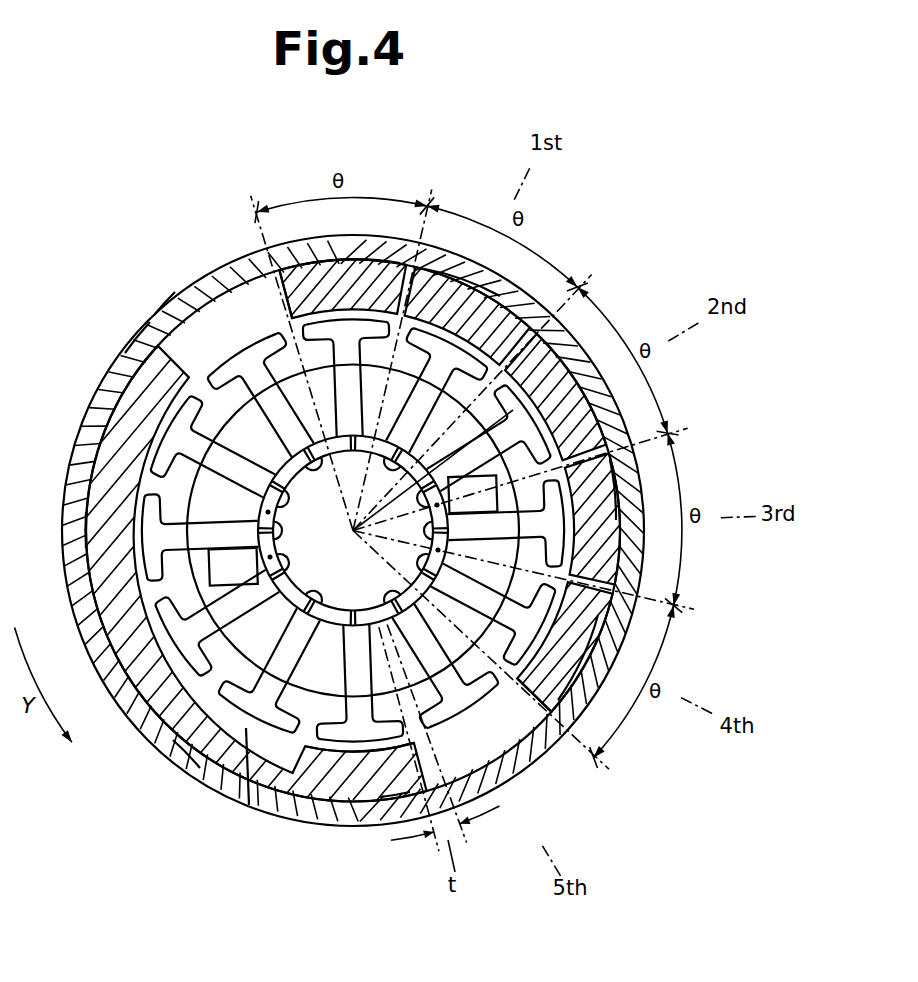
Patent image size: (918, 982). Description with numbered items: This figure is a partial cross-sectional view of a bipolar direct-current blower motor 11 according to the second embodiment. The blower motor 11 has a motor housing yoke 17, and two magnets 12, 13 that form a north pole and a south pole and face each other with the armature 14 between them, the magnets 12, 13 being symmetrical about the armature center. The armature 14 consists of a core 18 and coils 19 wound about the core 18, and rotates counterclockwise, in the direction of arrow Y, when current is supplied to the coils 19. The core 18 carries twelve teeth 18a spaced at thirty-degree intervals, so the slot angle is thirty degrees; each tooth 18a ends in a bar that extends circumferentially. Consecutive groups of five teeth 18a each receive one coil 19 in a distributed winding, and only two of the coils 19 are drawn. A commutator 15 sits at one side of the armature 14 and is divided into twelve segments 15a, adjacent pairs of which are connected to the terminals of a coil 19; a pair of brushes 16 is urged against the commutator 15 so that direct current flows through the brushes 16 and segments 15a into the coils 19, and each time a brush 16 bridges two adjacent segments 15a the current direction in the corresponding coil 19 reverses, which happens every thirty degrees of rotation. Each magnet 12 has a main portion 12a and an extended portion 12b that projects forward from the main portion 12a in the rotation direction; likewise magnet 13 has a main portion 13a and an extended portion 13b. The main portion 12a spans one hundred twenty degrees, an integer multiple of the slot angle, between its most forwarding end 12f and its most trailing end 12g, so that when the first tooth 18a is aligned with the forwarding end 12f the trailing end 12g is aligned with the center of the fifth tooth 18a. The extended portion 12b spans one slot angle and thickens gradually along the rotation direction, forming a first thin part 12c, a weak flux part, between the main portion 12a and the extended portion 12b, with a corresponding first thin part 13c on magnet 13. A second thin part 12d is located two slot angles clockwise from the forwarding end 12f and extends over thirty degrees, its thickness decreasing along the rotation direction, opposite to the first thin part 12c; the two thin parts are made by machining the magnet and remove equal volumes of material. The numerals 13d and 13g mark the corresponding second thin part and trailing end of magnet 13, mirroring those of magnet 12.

The blower motor 11 is at (588, 212).
The magnet 12 is at (605, 638).
The main portion 12a is at (543, 706).
The extended portion 12b is at (295, 262).
The first thin part 12c is at (360, 262).
The second thin part 12d is at (620, 473).
The most forwarding end 12f is at (446, 274).
The most trailing end 12g is at (552, 754).
The magnet 13 is at (105, 420).
The main portion 13a is at (190, 735).
The extended portion 13b is at (342, 797).
The first thin part 13c is at (394, 812).
The yoke thick portion 13d is at (86, 578).
The yoke thick portion end 13g is at (160, 322).
The armature 14 is at (249, 805).
The commutator 15 is at (363, 437).
The segment 15a is at (428, 531).
The brush 16 is at (234, 574).
The motor housing yoke 17 is at (138, 345).
The core 18 is at (350, 525).
The tooth 18a is at (268, 332).
The coil 19 is at (232, 424).